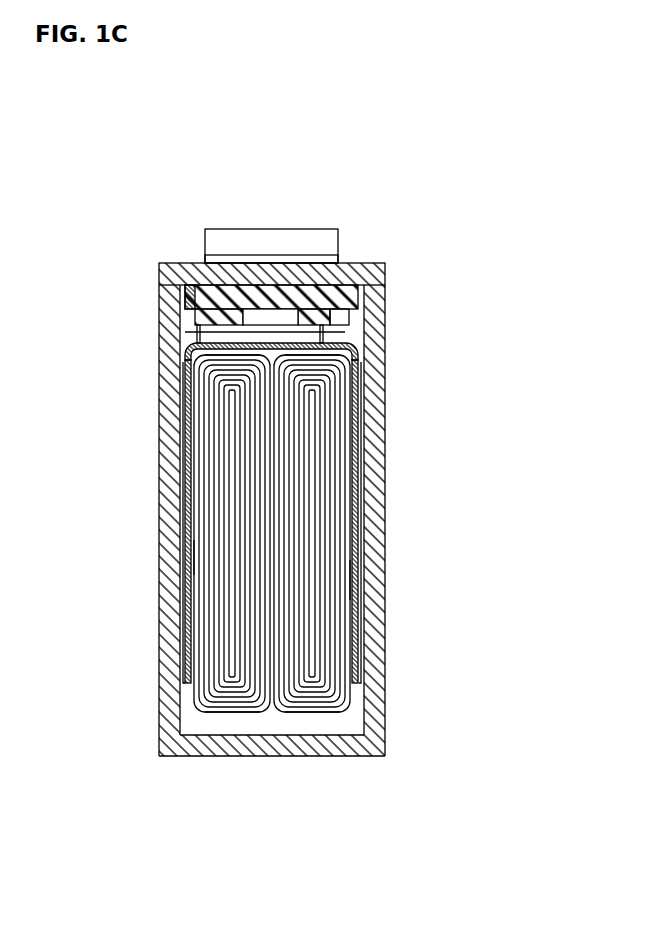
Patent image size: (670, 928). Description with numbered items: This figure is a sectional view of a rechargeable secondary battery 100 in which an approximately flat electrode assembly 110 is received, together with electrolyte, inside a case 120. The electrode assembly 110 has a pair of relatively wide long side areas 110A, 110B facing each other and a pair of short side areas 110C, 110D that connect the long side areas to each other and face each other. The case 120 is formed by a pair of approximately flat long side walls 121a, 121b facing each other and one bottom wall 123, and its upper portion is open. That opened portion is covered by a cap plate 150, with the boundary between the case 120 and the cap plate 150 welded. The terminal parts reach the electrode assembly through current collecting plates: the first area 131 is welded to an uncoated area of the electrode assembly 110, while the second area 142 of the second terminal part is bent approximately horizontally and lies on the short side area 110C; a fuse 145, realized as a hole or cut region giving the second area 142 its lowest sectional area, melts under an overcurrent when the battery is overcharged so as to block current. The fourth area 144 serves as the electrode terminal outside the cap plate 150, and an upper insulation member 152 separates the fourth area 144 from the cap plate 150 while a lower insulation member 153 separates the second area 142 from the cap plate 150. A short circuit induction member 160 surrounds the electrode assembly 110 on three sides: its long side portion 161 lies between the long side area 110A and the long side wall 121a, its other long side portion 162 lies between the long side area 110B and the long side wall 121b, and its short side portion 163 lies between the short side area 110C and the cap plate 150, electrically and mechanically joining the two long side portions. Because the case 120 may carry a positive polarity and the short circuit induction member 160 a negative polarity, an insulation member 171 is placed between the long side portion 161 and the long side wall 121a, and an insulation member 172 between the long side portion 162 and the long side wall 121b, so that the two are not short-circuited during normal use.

The rechargeable secondary battery 100 is at (462, 182).
The electrode assembly 110 is at (313, 481).
The long side area 110A is at (368, 578).
The long side area 110B is at (172, 557).
The short side area 110C is at (280, 348).
The short side area 110D is at (311, 728).
The case 120 is at (148, 770).
The long side wall 121a is at (385, 687).
The long side wall 121b is at (159, 675).
The bottom wall 123 is at (210, 748).
The first area 131 is at (345, 332).
The second area 142 is at (165, 278).
The fourth area 144 is at (226, 236).
The fuse 145 is at (230, 258).
The cap plate 150 is at (361, 262).
The upper insulation member 152 is at (265, 260).
The lower insulation member 153 is at (297, 292).
The short circuit induction member 160 is at (372, 342).
The long side portion 161 is at (360, 518).
The long side portion 162 is at (187, 492).
The short side portion 163 is at (343, 297).
The insulation member 171 is at (363, 643).
The insulation member 172 is at (183, 627).